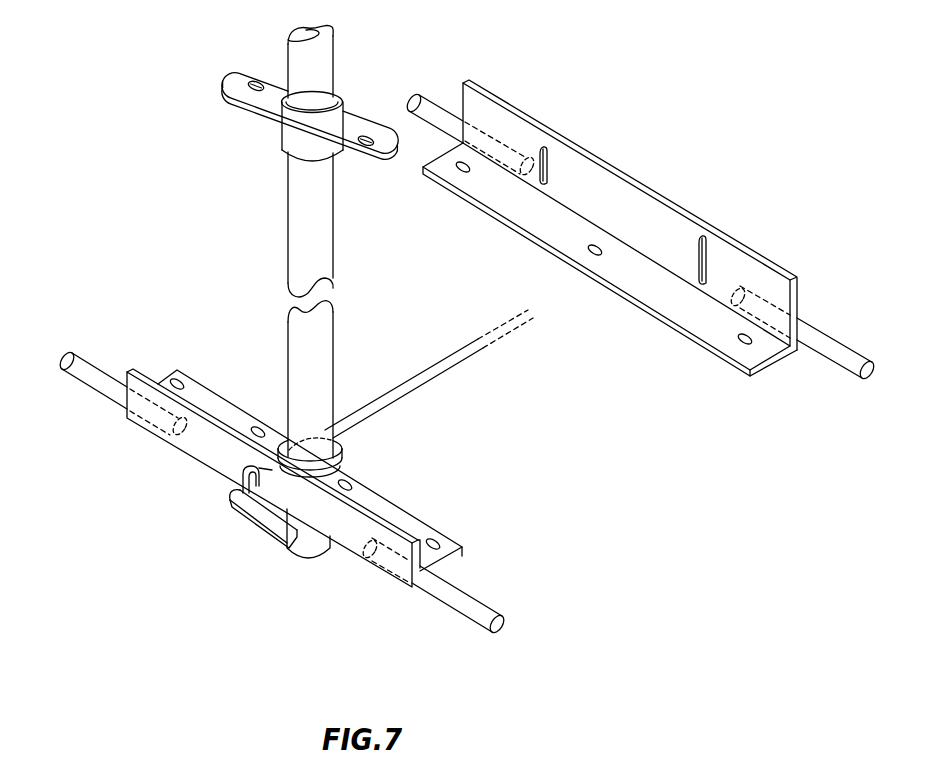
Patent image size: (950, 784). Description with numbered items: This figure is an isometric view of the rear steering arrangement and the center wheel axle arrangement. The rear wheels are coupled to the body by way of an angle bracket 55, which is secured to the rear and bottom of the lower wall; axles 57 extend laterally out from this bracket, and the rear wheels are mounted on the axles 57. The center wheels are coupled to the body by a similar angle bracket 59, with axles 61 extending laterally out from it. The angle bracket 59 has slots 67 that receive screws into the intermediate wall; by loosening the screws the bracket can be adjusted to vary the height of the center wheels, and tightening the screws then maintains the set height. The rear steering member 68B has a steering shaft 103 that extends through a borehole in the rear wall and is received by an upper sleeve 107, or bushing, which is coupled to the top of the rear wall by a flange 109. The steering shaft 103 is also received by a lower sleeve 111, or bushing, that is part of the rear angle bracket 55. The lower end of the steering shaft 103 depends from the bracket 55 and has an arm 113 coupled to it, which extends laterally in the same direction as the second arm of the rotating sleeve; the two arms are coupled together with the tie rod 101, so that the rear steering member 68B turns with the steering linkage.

The angle bracket 55 is at (198, 437).
The axles 57 is at (91, 378).
The angle bracket 59 is at (647, 185).
The axles 61 is at (431, 108).
The slots 67 is at (548, 152).
The rear steering member 68B is at (172, 218).
The tie rod 101 is at (406, 382).
The steering shaft 103 is at (303, 349).
The upper sleeve 107 is at (296, 146).
The flange 109 is at (262, 94).
The lower sleeve 111 is at (350, 456).
The arm 113 is at (262, 515).